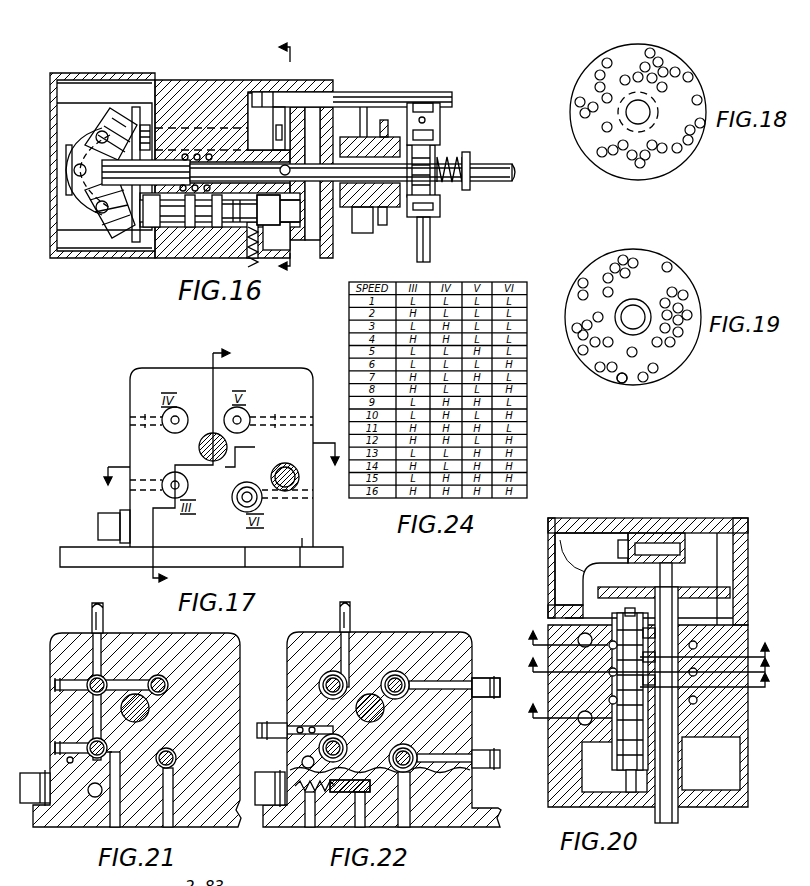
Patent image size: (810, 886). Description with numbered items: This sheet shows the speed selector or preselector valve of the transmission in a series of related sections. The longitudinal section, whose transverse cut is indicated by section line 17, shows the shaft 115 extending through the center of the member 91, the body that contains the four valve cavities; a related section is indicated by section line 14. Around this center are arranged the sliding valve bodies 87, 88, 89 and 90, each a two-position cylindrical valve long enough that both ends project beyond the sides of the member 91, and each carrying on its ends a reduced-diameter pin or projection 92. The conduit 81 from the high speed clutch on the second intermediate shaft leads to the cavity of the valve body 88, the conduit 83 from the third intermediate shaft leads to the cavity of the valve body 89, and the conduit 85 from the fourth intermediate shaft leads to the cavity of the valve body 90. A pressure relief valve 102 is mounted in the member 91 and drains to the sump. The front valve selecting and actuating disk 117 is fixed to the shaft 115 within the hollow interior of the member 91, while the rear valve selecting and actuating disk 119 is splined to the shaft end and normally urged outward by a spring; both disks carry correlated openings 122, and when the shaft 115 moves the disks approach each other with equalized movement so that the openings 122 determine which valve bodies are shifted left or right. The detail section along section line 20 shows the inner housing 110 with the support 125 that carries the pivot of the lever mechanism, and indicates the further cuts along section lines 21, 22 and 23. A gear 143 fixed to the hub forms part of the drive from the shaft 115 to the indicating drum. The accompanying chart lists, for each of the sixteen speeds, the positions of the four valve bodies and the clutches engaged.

In FIG. 16, the member 91 is at (262, 75).
In FIG. 21, the member 91 is at (220, 778).
In FIG. 16, the section line 17— 17 is at (291, 151).
In FIG. 16, the pin or projection 92 is at (290, 218).
In FIG. 20, the pin or projection 92 is at (624, 770).
In FIG. 16, the gear 143 is at (405, 217).
In FIG. 17, the section line 20— 20 is at (171, 459).
In FIG. 17, the section line 14— 14 is at (205, 466).
In FIG. 17, the sliding valve body 88 is at (175, 433).
In FIG. 21, the sliding valve body 88 is at (108, 677).
In FIG. 22, the sliding valve body 88 is at (345, 680).
In FIG. 17, the sliding valve body 89 is at (245, 431).
In FIG. 21, the sliding valve body 89 is at (170, 685).
In FIG. 22, the sliding valve body 89 is at (409, 678).
In FIG. 17, the sliding valve body 87 is at (188, 486).
In FIG. 20, the sliding valve body 87 is at (650, 627).
In FIG. 21, the sliding valve body 87 is at (109, 746).
In FIG. 22, the sliding valve body 87 is at (348, 748).
In FIG. 17, the sliding valve body 90 is at (236, 510).
In FIG. 21, the sliding valve body 90 is at (176, 755).
In FIG. 22, the sliding valve body 90 is at (408, 748).
In FIG. 18, the front valve selecting and actuating disk 117 is at (655, 172).
In FIG. 19, the rear valve selecting and actuating disk 119 is at (675, 363).
In FIG. 20, the rear valve selecting and actuating disk 119 is at (730, 591).
In FIG. 19, the openings 122 is at (622, 384).
In FIG. 20, the support 125 is at (607, 540).
In FIG. 20, the inner housing 110 is at (745, 557).
In FIG. 20, the shaft 115 is at (679, 825).
In FIG. 21, the shaft 115 is at (150, 709).
In FIG. 22, the shaft 115 is at (385, 708).
In FIG. 20, the section line 22— 22 is at (646, 638).
In FIG. 20, the section line 21— 21 is at (646, 662).
In FIG. 20, the section line 23— 23 is at (646, 695).
In FIG. 22, the fluid pressure conduit 81 is at (350, 616).
In FIG. 22, the pressure fluid conduit 83 is at (476, 700).
In FIG. 22, the fluid pressure conduit 85 is at (479, 769).
In FIG. 22, the pressure relief valve 102 is at (337, 792).